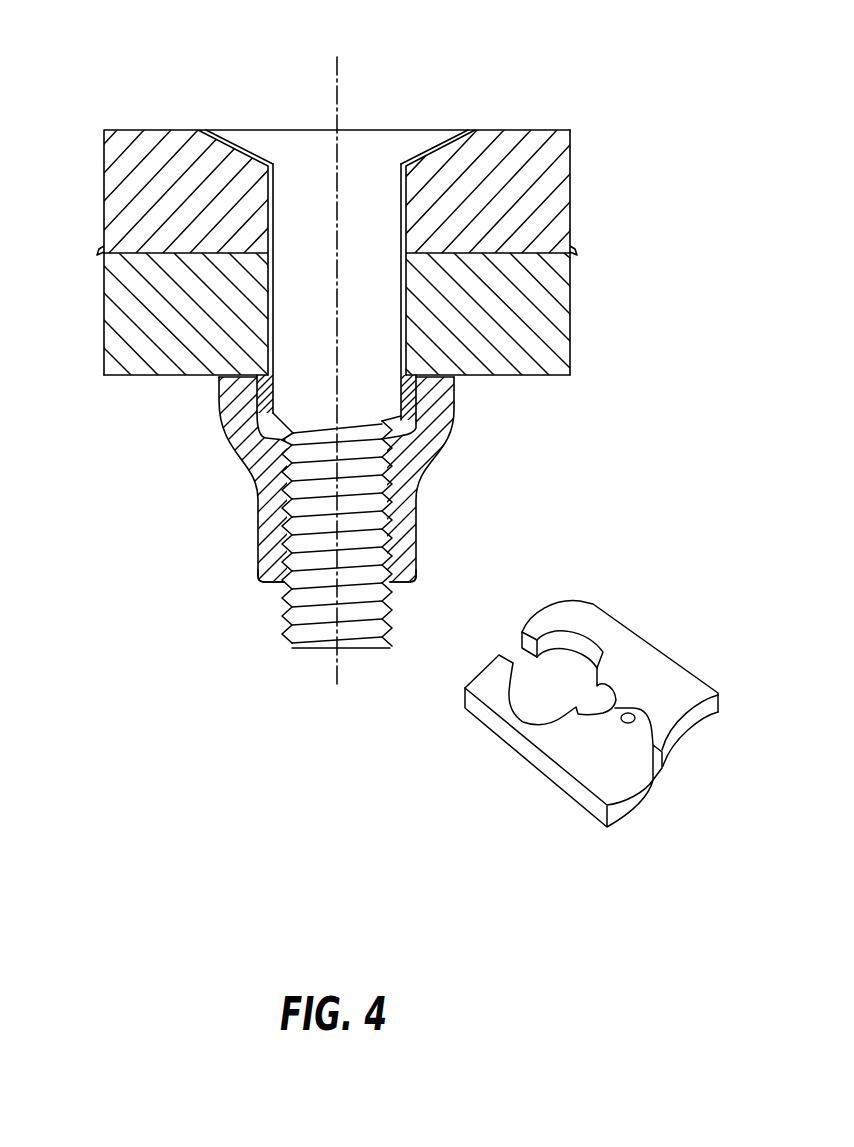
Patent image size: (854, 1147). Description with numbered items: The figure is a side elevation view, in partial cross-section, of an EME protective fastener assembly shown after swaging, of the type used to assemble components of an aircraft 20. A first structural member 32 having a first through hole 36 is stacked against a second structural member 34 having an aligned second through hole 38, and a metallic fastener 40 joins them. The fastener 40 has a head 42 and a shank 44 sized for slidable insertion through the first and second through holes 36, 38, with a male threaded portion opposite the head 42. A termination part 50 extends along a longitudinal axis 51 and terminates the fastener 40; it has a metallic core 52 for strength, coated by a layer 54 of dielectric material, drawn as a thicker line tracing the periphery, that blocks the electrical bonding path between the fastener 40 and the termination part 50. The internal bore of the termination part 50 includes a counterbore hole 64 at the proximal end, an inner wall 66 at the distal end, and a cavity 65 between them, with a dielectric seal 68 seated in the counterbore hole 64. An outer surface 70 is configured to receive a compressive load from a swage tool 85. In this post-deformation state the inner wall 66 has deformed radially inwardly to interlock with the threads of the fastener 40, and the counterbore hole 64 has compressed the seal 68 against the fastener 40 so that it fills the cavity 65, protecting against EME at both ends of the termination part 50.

The aircraft 20 is at (215, 625).
The first structural member 32 is at (533, 192).
The second structural member 34 is at (533, 318).
The first through hole 36 is at (270, 196).
The second through hole 38 is at (270, 299).
The fastener 40 is at (367, 172).
The head 42 is at (273, 141).
The shank 44 is at (290, 337).
The termination part 50 is at (430, 490).
The longitudinal axis 51 is at (337, 78).
The core 52 is at (264, 545).
The layer of dielectric material 54 is at (257, 506).
The counterbore hole 64 is at (455, 388).
The cavity 65 is at (408, 420).
The inner wall 66 is at (410, 580).
The seal 68 is at (220, 407).
The outer surface 70 is at (228, 465).
The swage tool 85 is at (535, 763).